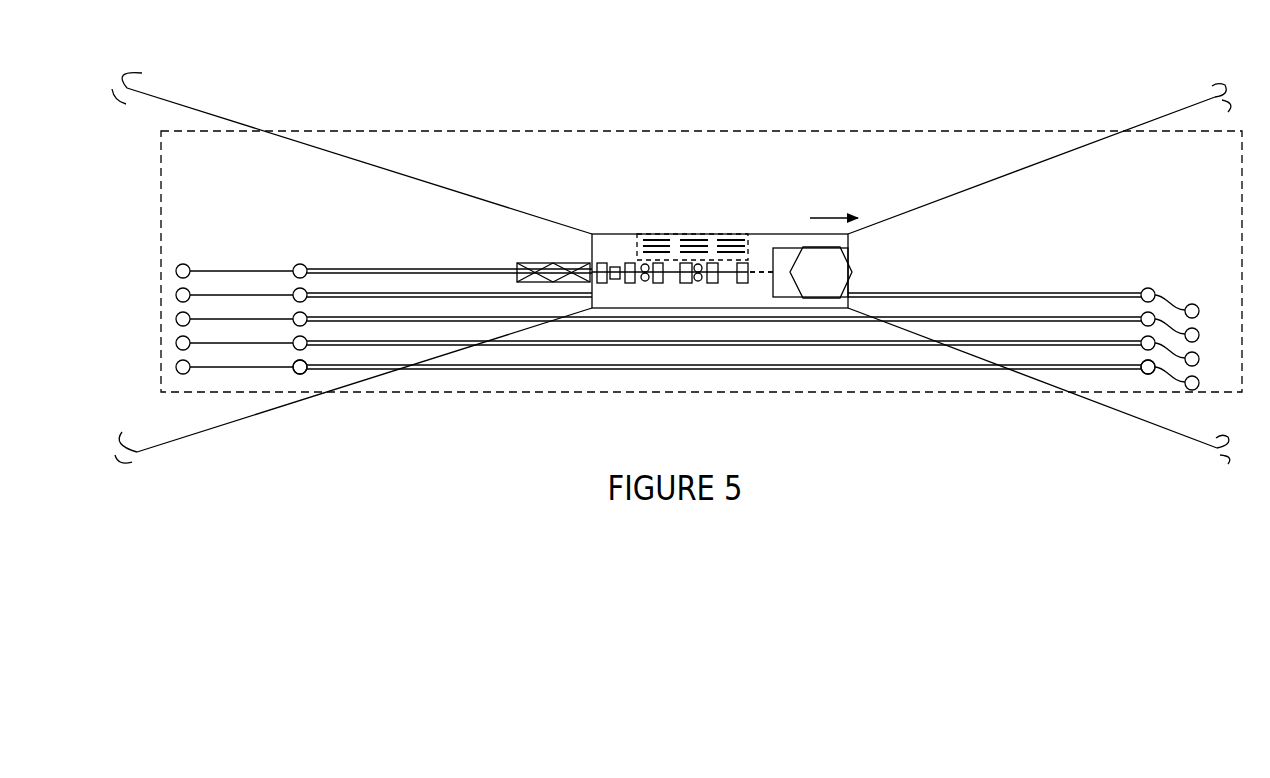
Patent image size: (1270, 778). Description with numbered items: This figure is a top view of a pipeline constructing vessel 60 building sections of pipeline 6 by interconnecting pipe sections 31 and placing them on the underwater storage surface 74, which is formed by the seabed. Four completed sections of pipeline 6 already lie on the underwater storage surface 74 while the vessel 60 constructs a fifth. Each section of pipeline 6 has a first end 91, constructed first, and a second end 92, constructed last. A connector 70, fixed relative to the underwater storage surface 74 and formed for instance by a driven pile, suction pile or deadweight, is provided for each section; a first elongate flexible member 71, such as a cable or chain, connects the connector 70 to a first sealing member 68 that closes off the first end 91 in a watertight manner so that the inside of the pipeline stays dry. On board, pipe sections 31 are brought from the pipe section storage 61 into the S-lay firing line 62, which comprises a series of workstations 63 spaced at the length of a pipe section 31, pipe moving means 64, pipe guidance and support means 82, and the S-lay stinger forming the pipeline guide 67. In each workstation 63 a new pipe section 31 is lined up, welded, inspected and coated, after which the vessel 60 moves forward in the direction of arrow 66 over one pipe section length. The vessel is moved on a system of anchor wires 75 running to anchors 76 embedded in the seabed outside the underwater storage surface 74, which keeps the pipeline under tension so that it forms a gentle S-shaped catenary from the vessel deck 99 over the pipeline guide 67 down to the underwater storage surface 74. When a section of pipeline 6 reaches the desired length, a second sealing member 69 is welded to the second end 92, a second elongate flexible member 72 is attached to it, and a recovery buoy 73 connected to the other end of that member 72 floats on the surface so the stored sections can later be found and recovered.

The section of pipeline 6 is at (466, 268).
The pipe section 31 is at (731, 240).
The pipeline constructing vessel 60 is at (855, 199).
The pipe section storage 61 is at (673, 236).
The S-lay firing line 62 is at (760, 271).
The workstation 63 is at (656, 262).
The pipe moving means 64 is at (603, 262).
The arrow 66 is at (830, 215).
The pipeline guide 67 is at (553, 262).
The first sealing member 68 is at (305, 265).
The second sealing member 69 is at (1148, 288).
The connector 70 is at (186, 263).
The first elongate flexible member 71 is at (247, 268).
The second elongate flexible member 72 is at (1168, 298).
The buoy 73 is at (1196, 302).
The underwater storage surface 74 is at (1008, 130).
The anchor wire 75 is at (1145, 125).
The anchor 76 is at (1222, 80).
The pipe guidance and support means 82 is at (647, 286).
The first end 91 is at (310, 373).
The second end 92 is at (1133, 373).
The vessel deck 99 is at (732, 300).